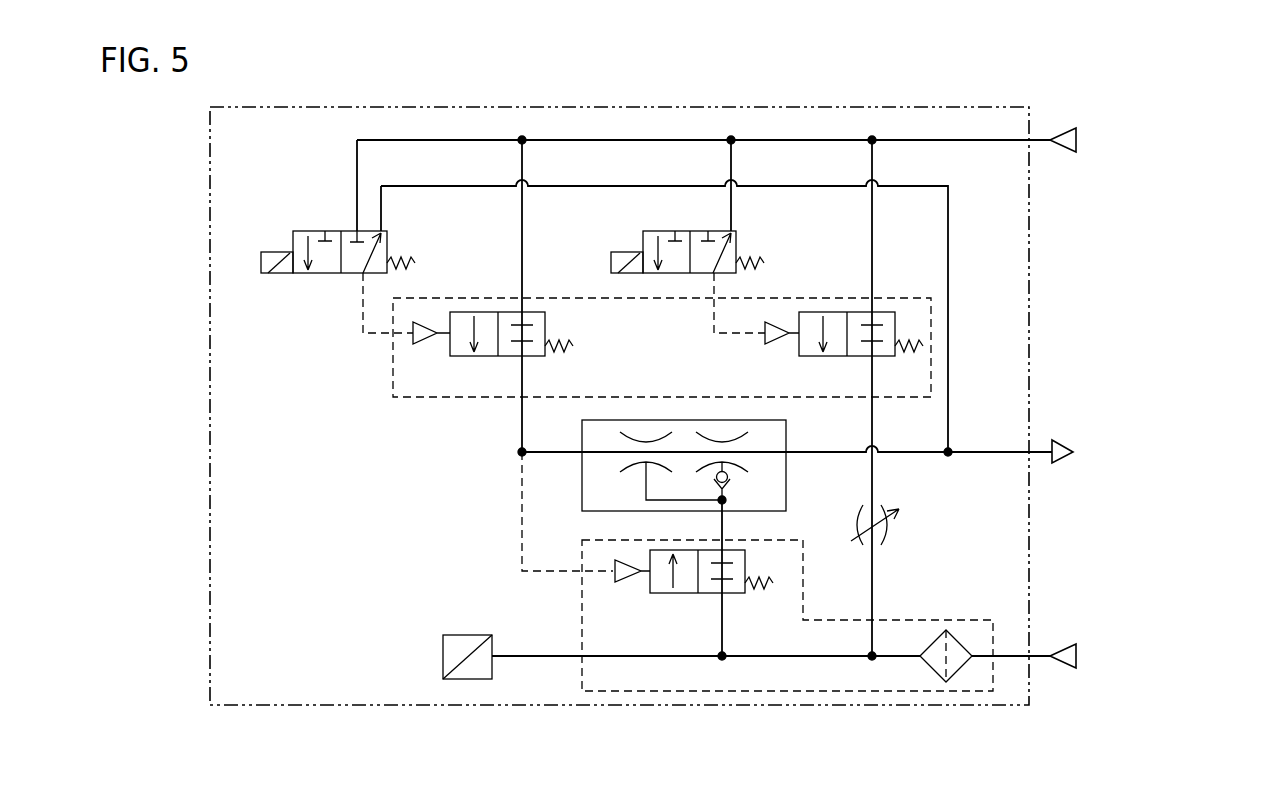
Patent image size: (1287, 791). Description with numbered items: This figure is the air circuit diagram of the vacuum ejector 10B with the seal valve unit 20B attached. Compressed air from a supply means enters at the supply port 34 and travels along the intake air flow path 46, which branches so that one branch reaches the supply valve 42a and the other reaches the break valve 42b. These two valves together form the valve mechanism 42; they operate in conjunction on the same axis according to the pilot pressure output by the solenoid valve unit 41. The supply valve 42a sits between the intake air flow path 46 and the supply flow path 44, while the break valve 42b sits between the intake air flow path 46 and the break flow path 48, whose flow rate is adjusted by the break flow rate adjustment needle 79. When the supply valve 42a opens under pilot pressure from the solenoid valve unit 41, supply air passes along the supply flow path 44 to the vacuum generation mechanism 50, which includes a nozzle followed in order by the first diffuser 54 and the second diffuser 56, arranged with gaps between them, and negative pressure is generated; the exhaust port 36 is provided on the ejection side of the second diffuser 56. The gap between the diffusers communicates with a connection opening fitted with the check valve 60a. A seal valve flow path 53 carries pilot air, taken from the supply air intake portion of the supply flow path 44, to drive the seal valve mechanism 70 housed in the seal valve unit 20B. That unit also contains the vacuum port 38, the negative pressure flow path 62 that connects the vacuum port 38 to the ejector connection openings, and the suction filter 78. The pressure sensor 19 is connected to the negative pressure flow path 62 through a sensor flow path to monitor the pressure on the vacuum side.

The vacuum ejector 10B is at (124, 153).
The pressure sensor 19 is at (443, 656).
The seal valve unit 20B is at (707, 692).
The supply port 34 is at (1063, 128).
The exhaust port 36 is at (1061, 440).
The vacuum port 38 is at (1065, 645).
The solenoid valve unit 41 is at (387, 239).
The valve mechanism 42 is at (443, 397).
The supply valve 42a is at (545, 330).
The break valve 42b is at (810, 356).
The supply flow path 44 is at (522, 420).
The intake air flow path 46 is at (940, 143).
The break flow path 48 is at (872, 583).
The vacuum generation mechanism 50 is at (786, 478).
The seal valve flow path 53 is at (522, 522).
The first diffuser 54 is at (637, 471).
The second diffuser 56 is at (738, 472).
The check valve 60a is at (713, 474).
The negative pressure flow path 62 is at (722, 523).
The seal valve mechanism 70 is at (706, 594).
The suction filter 78 is at (956, 640).
The break flow rate adjustment needle 79 is at (893, 505).